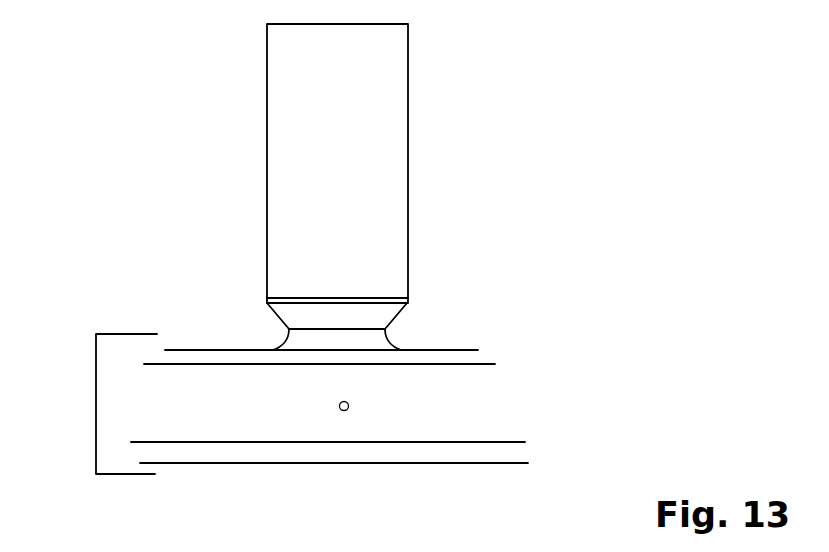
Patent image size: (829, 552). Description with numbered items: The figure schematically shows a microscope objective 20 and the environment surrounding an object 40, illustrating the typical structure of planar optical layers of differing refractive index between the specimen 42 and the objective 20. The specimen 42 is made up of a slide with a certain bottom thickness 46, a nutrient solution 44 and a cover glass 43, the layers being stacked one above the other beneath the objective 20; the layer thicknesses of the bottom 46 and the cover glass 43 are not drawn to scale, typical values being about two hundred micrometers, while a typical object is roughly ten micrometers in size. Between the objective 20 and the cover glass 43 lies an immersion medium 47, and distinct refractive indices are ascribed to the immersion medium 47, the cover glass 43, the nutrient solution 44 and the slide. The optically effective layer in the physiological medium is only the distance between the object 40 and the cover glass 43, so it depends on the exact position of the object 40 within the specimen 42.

The objective 20 is at (402, 97).
The immersion medium 47 is at (373, 339).
The specimen 42 is at (96, 405).
The cover glass 43 is at (483, 357).
The object 40 is at (346, 401).
The nutrient solution 44 is at (481, 420).
The bottom thickness 46 is at (515, 452).